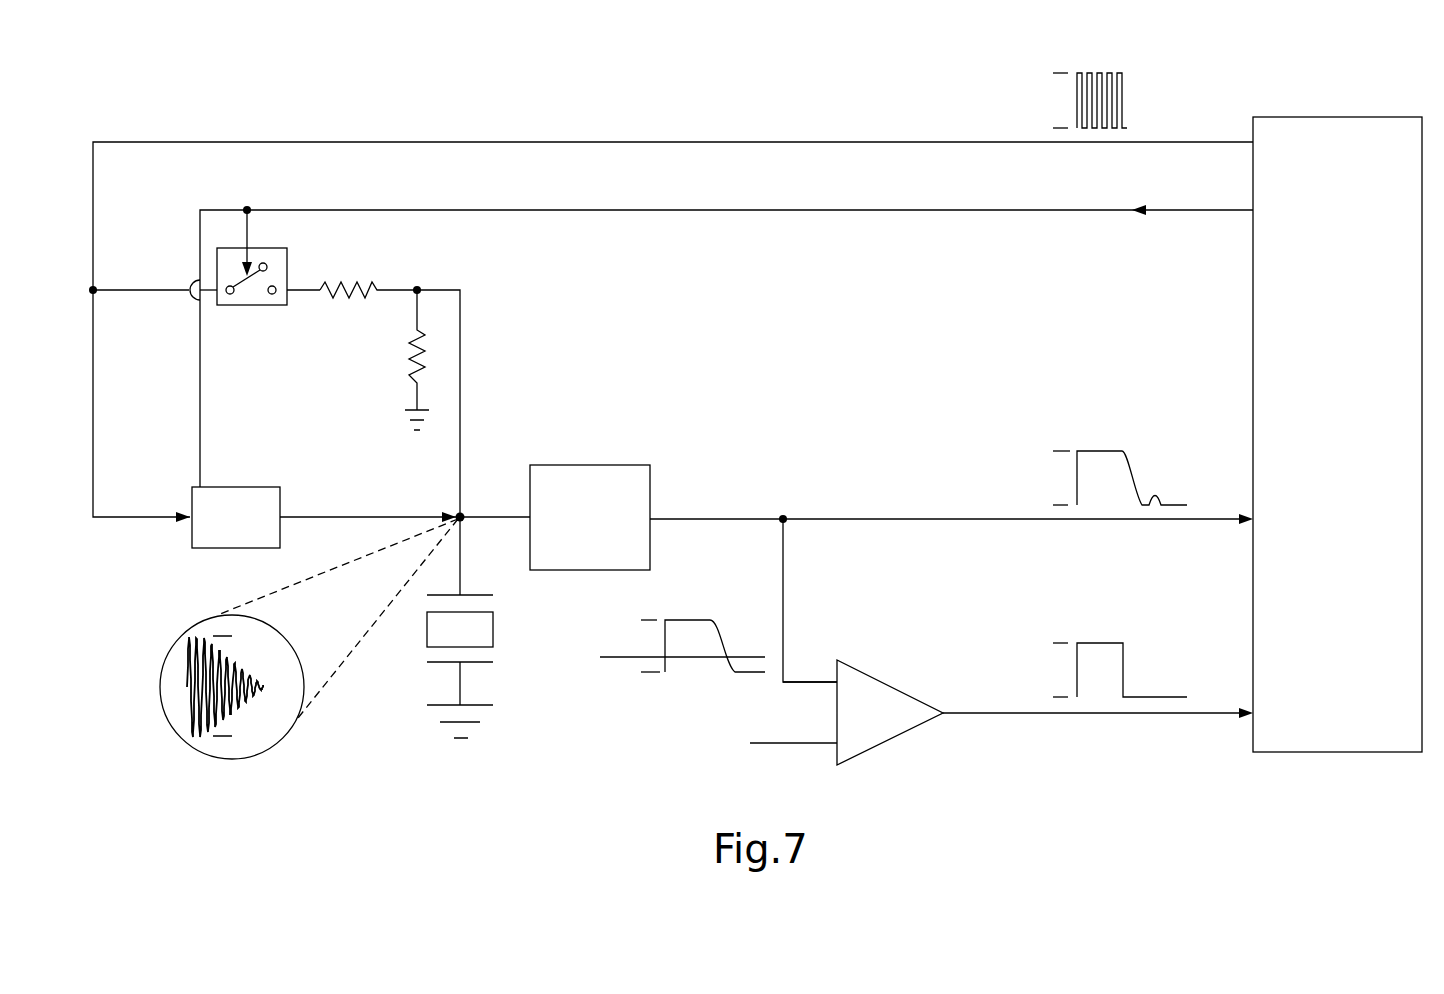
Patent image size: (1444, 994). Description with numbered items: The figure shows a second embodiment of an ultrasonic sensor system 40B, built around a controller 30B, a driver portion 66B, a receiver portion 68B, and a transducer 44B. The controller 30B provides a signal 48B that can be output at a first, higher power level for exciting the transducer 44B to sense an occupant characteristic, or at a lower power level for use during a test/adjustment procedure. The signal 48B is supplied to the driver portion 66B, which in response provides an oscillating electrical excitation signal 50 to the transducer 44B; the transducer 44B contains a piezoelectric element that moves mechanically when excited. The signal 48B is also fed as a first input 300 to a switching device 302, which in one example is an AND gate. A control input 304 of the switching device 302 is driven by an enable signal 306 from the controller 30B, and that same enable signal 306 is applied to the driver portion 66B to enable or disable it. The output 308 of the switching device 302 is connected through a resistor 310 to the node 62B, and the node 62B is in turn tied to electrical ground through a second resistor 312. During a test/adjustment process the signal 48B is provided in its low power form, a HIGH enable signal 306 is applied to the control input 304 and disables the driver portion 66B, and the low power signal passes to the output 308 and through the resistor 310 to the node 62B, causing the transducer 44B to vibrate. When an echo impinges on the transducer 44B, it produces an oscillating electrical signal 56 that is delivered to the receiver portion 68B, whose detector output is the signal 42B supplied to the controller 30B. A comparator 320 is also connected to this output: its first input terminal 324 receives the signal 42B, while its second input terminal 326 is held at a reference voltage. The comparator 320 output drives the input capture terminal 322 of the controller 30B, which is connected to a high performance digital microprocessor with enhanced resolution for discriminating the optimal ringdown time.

The ultrasonic sensor system 40B is at (805, 85).
The controller 30B is at (1356, 442).
The signal 48B is at (542, 142).
The enable signal 306 is at (740, 210).
The control input 304 is at (248, 223).
The switching device 302 is at (282, 277).
The first input 300 is at (166, 292).
The output 308 is at (316, 293).
The resistor 310 is at (357, 290).
The second resistor 312 is at (412, 358).
The driver portion 66B is at (262, 493).
The electrical excitation signal 50 is at (312, 517).
The node 62B is at (457, 512).
The oscillating electrical signal 56 is at (478, 517).
The receiver portion 68B is at (627, 478).
The signal output 42B is at (880, 519).
The comparator 320 is at (878, 685).
The first input terminal 324 is at (835, 680).
The second input terminal 326 is at (833, 748).
The input capture terminal 322 is at (1252, 718).
The transducer 44B is at (412, 661).